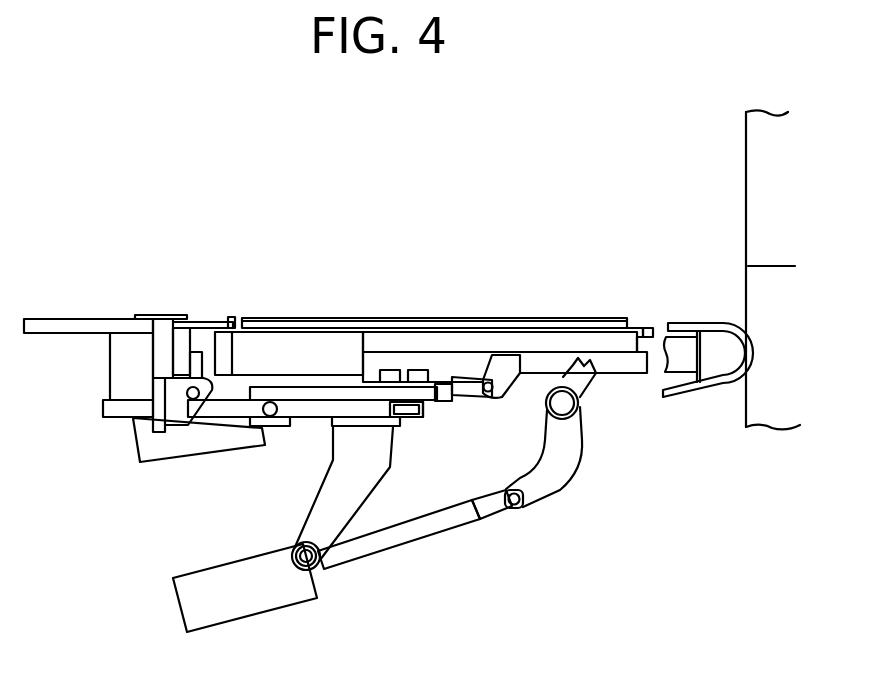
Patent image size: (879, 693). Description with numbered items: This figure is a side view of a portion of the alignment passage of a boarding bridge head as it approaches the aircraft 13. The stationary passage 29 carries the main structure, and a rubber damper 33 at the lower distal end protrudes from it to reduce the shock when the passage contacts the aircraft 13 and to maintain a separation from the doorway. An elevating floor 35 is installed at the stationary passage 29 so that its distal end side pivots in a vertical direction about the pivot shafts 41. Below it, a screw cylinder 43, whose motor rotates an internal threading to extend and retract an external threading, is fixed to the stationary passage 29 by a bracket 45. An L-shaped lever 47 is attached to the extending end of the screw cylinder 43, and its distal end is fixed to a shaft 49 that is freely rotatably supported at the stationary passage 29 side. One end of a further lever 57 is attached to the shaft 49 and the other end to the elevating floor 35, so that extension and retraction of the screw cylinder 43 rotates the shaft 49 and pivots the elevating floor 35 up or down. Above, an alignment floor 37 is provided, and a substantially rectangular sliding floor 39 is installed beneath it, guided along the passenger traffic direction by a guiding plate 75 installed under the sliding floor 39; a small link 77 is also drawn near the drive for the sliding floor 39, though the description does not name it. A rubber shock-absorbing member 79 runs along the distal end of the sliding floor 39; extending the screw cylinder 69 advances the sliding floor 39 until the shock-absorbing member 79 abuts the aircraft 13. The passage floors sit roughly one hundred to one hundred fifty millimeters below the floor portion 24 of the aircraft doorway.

The aircraft 13 is at (746, 148).
The floor portion 24 is at (778, 265).
The stationary passage 29 is at (85, 318).
The rubber damper 33 is at (710, 396).
The elevating floor 35 is at (213, 318).
The alignment floor 37 is at (372, 318).
The sliding floor 39 is at (637, 318).
The pivot shafts 41 is at (190, 415).
The screw cylinder 43 is at (345, 557).
The bracket 45 is at (315, 498).
The L-shaped lever 47 is at (563, 493).
The shaft 49 is at (562, 407).
The lever 57 is at (587, 383).
The screw cylinder 69 is at (443, 403).
The guiding plate 75 is at (362, 340).
The bracket 77 is at (508, 398).
The rubber shock-absorbing member 79 is at (653, 328).